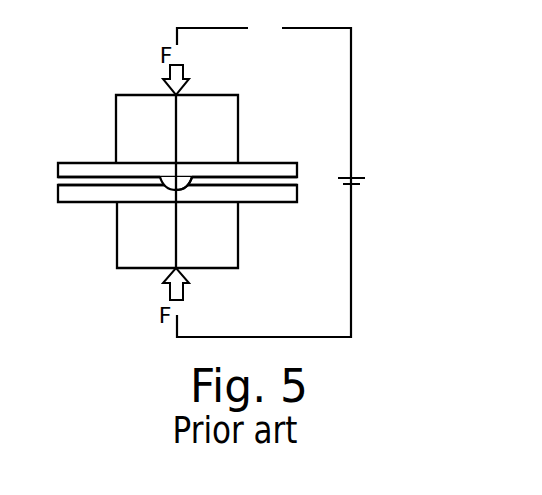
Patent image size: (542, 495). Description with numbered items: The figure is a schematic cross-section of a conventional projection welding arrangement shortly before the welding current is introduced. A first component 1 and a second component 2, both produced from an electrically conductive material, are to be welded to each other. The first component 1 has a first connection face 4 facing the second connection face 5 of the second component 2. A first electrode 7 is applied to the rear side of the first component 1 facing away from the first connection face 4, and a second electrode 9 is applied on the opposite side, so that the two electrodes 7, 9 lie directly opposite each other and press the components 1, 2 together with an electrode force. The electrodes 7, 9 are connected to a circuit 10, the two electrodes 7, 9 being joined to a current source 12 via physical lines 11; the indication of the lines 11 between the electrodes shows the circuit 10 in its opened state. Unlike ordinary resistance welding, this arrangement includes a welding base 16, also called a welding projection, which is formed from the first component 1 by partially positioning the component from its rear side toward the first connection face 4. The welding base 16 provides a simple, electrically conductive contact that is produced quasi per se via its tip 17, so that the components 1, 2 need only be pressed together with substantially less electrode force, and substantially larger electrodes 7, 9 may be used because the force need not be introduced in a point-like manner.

The first component 1 is at (67, 162).
The second component 2 is at (72, 193).
The first connection face 4 is at (281, 185).
The second connection face 5 is at (256, 178).
The first electrode 7 is at (126, 113).
The second electrode 9 is at (133, 255).
The circuit 10 is at (368, 68).
The physical lines 11 is at (264, 28).
The current source 12 is at (368, 181).
The welding base 16 is at (166, 174).
The tip 17 is at (182, 168).